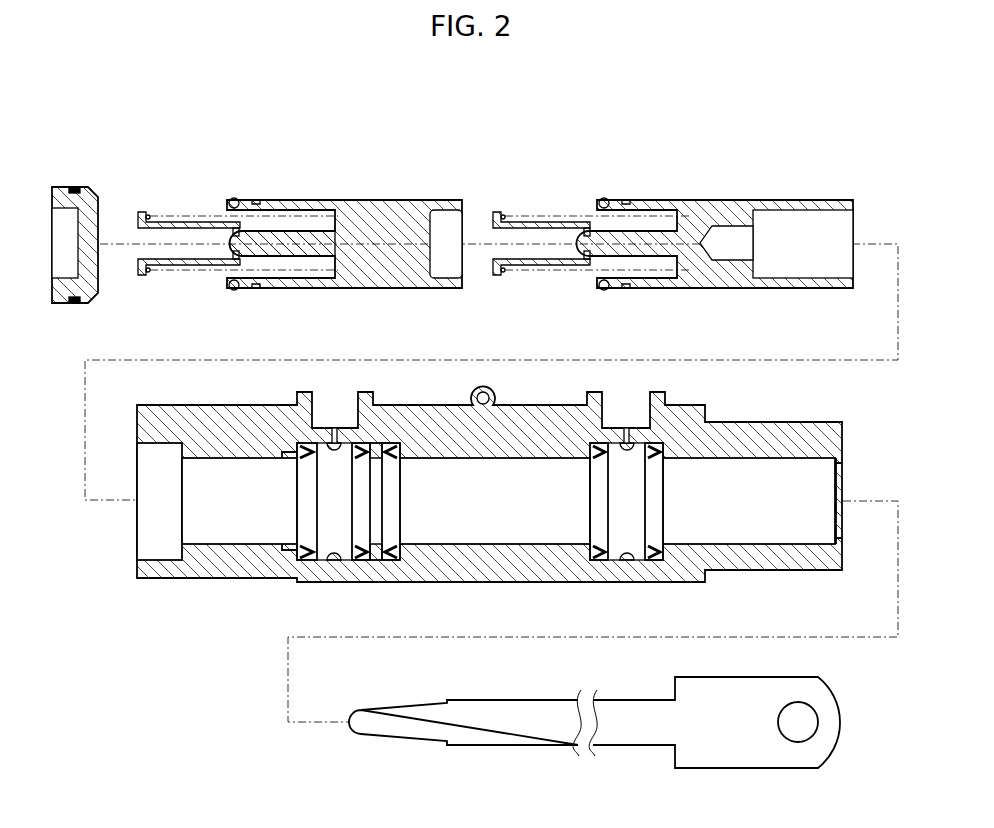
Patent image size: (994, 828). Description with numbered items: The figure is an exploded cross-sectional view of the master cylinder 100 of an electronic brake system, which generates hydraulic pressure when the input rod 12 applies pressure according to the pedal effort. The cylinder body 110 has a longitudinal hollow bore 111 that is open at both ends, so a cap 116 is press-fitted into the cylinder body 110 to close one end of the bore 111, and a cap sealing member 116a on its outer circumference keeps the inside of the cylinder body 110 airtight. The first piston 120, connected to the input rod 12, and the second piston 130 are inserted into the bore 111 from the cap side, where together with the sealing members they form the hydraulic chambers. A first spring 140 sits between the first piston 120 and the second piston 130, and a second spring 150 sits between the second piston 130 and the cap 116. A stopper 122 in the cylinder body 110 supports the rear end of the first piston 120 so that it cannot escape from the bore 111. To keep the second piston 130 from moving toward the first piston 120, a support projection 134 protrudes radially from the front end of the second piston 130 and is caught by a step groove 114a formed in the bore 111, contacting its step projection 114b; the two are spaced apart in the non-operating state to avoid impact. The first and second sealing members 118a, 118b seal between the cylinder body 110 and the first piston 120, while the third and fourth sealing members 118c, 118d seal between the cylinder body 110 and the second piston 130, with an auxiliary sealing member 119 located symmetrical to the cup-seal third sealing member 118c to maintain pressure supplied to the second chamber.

The master cylinder 100 is at (845, 186).
The input rod 12 is at (515, 704).
The cylinder body 110 is at (489, 493).
The bore 111 is at (501, 546).
The step groove 114a is at (218, 546).
The step projection 114b is at (289, 550).
The cap 116 is at (98, 207).
The cap sealing member 116a is at (73, 186).
The first sealing member 118a is at (655, 444).
The second sealing member 118b is at (600, 444).
The third sealing member 118c is at (362, 444).
The fourth sealing member 118d is at (307, 444).
The auxiliary sealing member 119 is at (392, 444).
The first piston 120 is at (688, 206).
The stopper 122 is at (843, 462).
The second piston 130 is at (386, 206).
The support projection 134 is at (233, 290).
The first spring 140 is at (502, 276).
The second spring 150 is at (148, 276).